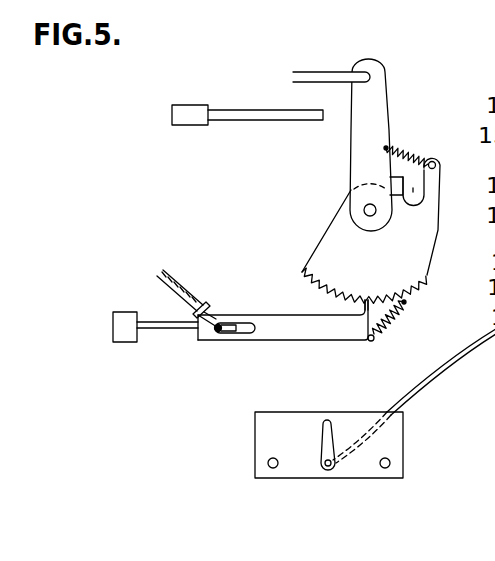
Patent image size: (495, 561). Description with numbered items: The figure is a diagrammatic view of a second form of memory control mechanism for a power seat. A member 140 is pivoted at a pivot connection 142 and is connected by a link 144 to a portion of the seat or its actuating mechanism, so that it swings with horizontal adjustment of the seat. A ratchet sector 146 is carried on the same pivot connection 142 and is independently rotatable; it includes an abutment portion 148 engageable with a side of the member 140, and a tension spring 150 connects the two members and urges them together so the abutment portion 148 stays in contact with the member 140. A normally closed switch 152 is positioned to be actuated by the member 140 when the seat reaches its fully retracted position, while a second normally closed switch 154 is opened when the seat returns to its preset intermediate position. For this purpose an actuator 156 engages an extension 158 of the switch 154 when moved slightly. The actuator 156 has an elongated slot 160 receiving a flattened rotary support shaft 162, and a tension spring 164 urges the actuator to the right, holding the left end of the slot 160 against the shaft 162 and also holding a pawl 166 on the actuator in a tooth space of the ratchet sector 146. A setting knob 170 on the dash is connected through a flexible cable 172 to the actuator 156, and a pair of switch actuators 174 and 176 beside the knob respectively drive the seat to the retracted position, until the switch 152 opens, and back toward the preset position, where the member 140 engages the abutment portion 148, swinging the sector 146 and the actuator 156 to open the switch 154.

The member 140 is at (380, 117).
The pivot connection 142 is at (364, 210).
The link 144 is at (316, 71).
The ratchet sector 146 is at (427, 249).
The abutment portion 148 is at (404, 183).
The tension spring 150 is at (411, 158).
The normally closed switch 152 is at (188, 119).
The second normally closed switch 154 is at (128, 342).
The actuator 156 is at (268, 313).
The extension 158 is at (172, 328).
The elongated slot 160 is at (245, 335).
The flattened rotary support shaft 162 is at (221, 333).
The tension spring 164 is at (396, 324).
The pawl 166 is at (367, 298).
The setting knob 170 is at (335, 436).
The flexible cable 172 is at (192, 293).
The switch actuator 174 is at (273, 470).
The switch actuator 176 is at (391, 462).